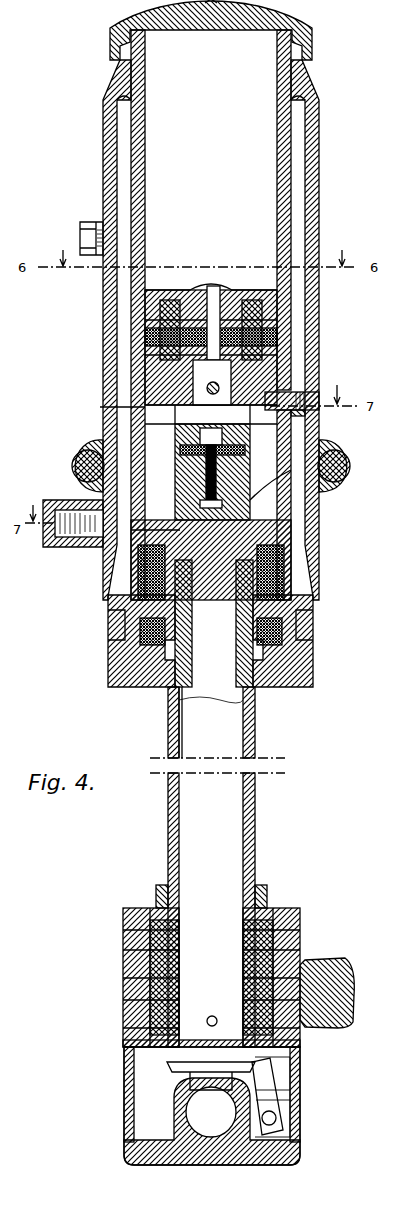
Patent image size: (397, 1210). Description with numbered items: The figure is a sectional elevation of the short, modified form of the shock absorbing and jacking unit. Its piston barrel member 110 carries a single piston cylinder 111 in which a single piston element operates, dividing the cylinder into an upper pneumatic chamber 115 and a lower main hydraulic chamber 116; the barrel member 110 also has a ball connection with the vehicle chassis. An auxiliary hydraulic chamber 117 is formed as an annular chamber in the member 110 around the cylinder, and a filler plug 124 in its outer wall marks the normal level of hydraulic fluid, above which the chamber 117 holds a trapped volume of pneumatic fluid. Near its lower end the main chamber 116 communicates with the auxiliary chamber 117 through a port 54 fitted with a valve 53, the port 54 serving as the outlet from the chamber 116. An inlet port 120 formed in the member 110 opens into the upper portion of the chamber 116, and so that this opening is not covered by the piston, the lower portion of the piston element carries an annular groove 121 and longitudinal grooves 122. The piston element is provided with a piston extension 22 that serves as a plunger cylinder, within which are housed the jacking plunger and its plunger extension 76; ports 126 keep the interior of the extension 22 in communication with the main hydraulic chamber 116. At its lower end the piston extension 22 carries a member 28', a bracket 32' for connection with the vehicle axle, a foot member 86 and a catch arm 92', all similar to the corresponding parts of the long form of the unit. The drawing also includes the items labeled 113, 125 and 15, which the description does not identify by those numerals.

The upper pneumatic chamber 115 is at (143, 80).
The piston cylinder 111 is at (277, 104).
The piston barrel member 110 is at (319, 120).
The filler plug 124 is at (80, 228).
The piston head 113 is at (238, 288).
The auxiliary hydraulic chamber 117 is at (297, 322).
The annular groove 121 is at (276, 388).
The longitudinal grooves 122 is at (303, 392).
The inlet port 120 is at (318, 411).
The rod 125 is at (175, 407).
The ports 126 is at (262, 404).
The lower piston 15 is at (243, 492).
The lower main hydraulic chamber 116 is at (292, 480).
The valve 53 is at (95, 504).
The port 54 is at (148, 525).
The plunger extension 76 is at (188, 714).
The piston extension 22 is at (256, 826).
The member 28' is at (232, 981).
The bracket 32' is at (327, 981).
The foot member 86 is at (298, 1156).
The catch arm 92' is at (291, 1097).